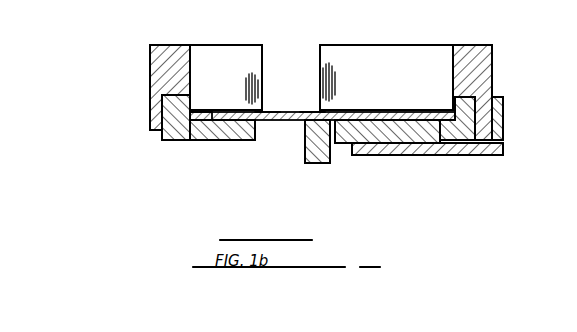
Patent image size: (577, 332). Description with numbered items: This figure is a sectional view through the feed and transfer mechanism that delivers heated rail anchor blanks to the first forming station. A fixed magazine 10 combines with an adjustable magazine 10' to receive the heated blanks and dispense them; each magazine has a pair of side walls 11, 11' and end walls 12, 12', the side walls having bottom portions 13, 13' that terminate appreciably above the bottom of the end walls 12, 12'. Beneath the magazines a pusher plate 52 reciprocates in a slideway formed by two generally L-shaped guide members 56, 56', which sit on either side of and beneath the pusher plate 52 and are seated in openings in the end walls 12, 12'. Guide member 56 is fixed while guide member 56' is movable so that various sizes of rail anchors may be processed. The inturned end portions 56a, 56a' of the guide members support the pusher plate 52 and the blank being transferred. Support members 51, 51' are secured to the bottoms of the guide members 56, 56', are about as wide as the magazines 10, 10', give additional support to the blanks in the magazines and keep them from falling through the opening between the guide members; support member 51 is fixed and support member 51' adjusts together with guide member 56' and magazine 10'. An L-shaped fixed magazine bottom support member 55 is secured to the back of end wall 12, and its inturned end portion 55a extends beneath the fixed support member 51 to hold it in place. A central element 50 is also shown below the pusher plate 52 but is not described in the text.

The fixed magazine 10 is at (505, 45).
The adjustable magazine 10' is at (145, 42).
The side wall 11 is at (386, 62).
The side wall 11' is at (247, 63).
The end wall 12 is at (496, 92).
The end wall 12' is at (144, 87).
The bottom portion 13 is at (311, 89).
The bottom portion 13' is at (273, 84).
The center post 50 is at (322, 163).
The support member 51 is at (387, 108).
The support member 51' is at (222, 157).
The pusher plate 52 is at (283, 120).
The fixed magazine bottom support member 55 is at (505, 143).
The inturned end portion 55a is at (437, 153).
The guide member 56 is at (493, 118).
The guide member 56' is at (148, 127).
The inturned end portion 56a is at (437, 97).
The inturned end portion 56a' is at (209, 97).